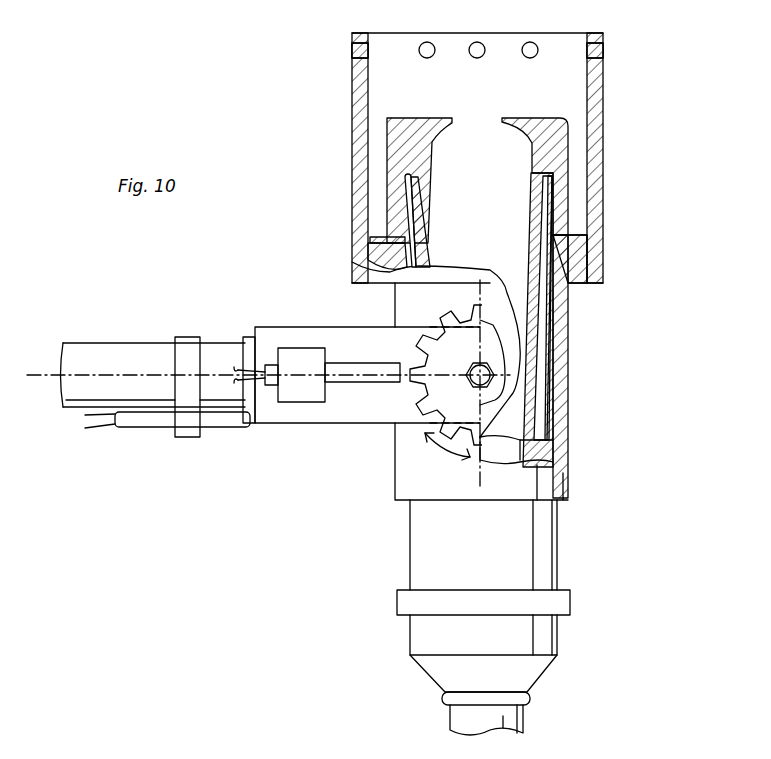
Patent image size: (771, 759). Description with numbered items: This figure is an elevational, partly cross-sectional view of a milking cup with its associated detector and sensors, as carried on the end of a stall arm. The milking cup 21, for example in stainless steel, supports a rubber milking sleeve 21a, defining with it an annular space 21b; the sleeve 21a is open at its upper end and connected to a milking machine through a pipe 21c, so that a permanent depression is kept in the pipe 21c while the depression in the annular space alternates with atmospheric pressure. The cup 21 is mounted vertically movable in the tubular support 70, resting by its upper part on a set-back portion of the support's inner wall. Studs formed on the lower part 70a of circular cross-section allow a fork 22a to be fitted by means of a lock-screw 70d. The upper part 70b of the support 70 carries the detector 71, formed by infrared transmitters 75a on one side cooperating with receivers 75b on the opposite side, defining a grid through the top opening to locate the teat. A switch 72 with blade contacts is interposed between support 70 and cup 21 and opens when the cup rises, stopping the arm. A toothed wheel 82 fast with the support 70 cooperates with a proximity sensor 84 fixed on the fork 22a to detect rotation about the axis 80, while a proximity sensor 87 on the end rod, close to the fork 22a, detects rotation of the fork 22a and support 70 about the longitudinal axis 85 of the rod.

The detector 71 is at (552, 27).
The transmitters 75a is at (352, 48).
The receivers 75b is at (597, 50).
The lower part of support 70a is at (597, 163).
The switch 72 is at (372, 237).
The milking sleeve 21a is at (540, 237).
The tubular support 70 is at (350, 290).
The annular space 21b is at (547, 330).
The longitudinal axis of rod 85 is at (40, 375).
The toothed wheel 82 is at (415, 352).
The axis 80 is at (268, 364).
The proximity sensor 84 is at (360, 378).
The lock-screw 70d is at (469, 366).
The fork 22a is at (368, 423).
The milking cup 21 is at (552, 320).
The proximity sensor 87 is at (225, 427).
The upper part of support 70b is at (396, 490).
The pipe 21c is at (450, 716).